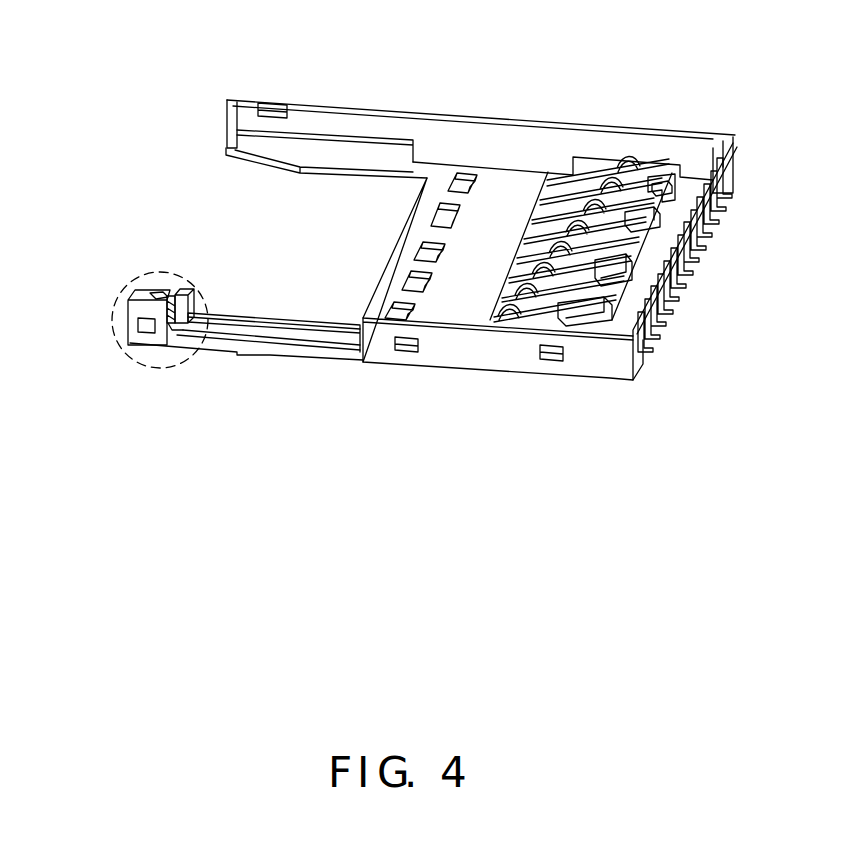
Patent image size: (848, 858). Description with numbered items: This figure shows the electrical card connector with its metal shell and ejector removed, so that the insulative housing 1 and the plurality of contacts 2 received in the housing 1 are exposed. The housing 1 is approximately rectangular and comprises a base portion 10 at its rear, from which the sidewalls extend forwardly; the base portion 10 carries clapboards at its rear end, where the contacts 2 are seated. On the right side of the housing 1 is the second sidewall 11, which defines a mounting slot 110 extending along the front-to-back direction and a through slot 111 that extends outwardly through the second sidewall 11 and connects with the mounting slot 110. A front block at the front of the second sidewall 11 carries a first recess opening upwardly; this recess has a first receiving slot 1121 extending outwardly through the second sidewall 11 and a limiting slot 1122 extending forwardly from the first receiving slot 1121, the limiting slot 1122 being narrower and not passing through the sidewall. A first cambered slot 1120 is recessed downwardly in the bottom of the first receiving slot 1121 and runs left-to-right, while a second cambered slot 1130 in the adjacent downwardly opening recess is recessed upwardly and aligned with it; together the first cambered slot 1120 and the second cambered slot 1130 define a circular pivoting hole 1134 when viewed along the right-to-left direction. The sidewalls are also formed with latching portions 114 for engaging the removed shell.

The insulative housing 1 is at (646, 147).
The contacts 2 is at (530, 210).
The base portion 10 is at (723, 217).
The second sidewall 11 is at (350, 110).
The mounting slot 110 is at (333, 343).
The through slot 111 is at (300, 343).
The latching portions 114 is at (550, 355).
The first cambered slot 1120 is at (168, 327).
The first receiving slot 1121 is at (184, 296).
The limiting slot 1122 is at (163, 296).
The second cambered slot 1130 is at (170, 298).
The pivoting hole 1134 is at (170, 327).